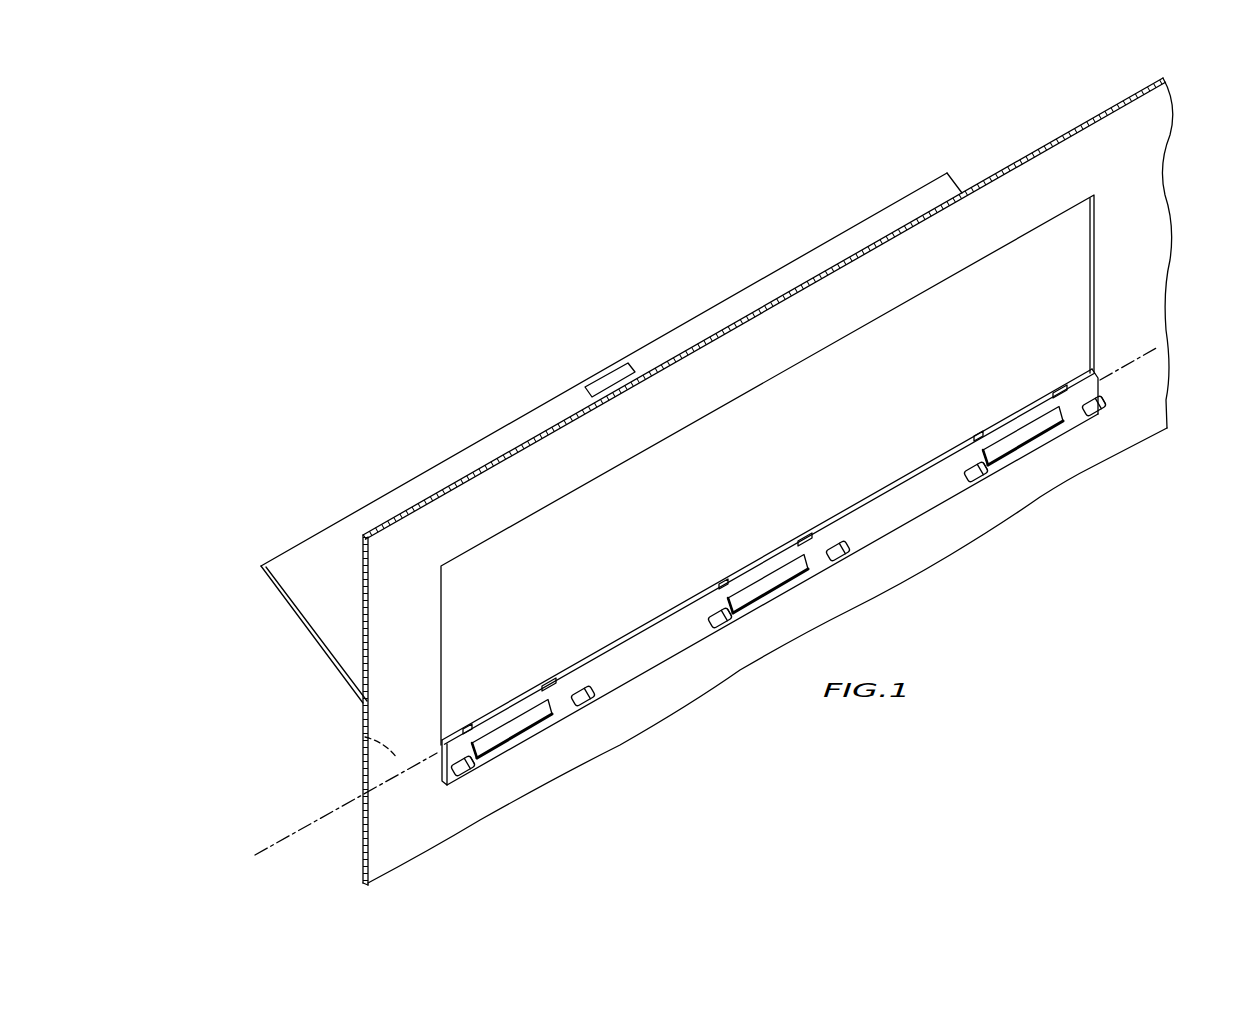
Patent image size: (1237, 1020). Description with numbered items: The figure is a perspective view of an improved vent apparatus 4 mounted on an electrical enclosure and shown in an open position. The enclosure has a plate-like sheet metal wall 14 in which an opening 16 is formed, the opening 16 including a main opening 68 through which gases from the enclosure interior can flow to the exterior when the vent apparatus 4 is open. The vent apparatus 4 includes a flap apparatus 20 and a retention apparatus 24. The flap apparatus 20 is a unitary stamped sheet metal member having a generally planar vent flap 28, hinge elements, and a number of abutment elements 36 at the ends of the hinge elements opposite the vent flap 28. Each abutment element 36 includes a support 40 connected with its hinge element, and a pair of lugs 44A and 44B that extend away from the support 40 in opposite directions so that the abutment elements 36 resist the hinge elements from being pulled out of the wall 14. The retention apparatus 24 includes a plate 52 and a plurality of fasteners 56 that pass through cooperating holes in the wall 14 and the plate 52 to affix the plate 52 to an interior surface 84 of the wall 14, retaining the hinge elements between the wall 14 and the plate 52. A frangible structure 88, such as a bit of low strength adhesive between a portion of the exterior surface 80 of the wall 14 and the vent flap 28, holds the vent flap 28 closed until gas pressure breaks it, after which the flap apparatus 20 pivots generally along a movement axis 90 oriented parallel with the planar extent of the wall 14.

The vent apparatus 4 is at (952, 158).
The wall 14 is at (1153, 150).
The opening 16 is at (1088, 238).
The flap apparatus 20 is at (262, 598).
The retention apparatus 24 is at (622, 677).
The vent flap 28 is at (303, 544).
The abutment elements 36 is at (515, 750).
The support 40 is at (522, 745).
The lug 44A is at (462, 758).
The lug 44B is at (575, 692).
The plate 52 is at (905, 526).
The fasteners 56 is at (473, 775).
The main opening 68 is at (1062, 288).
The exterior surface 80 is at (365, 737).
The interior surface 84 is at (1153, 320).
The frangible structure 88 is at (618, 374).
The movement axis 90 is at (328, 812).